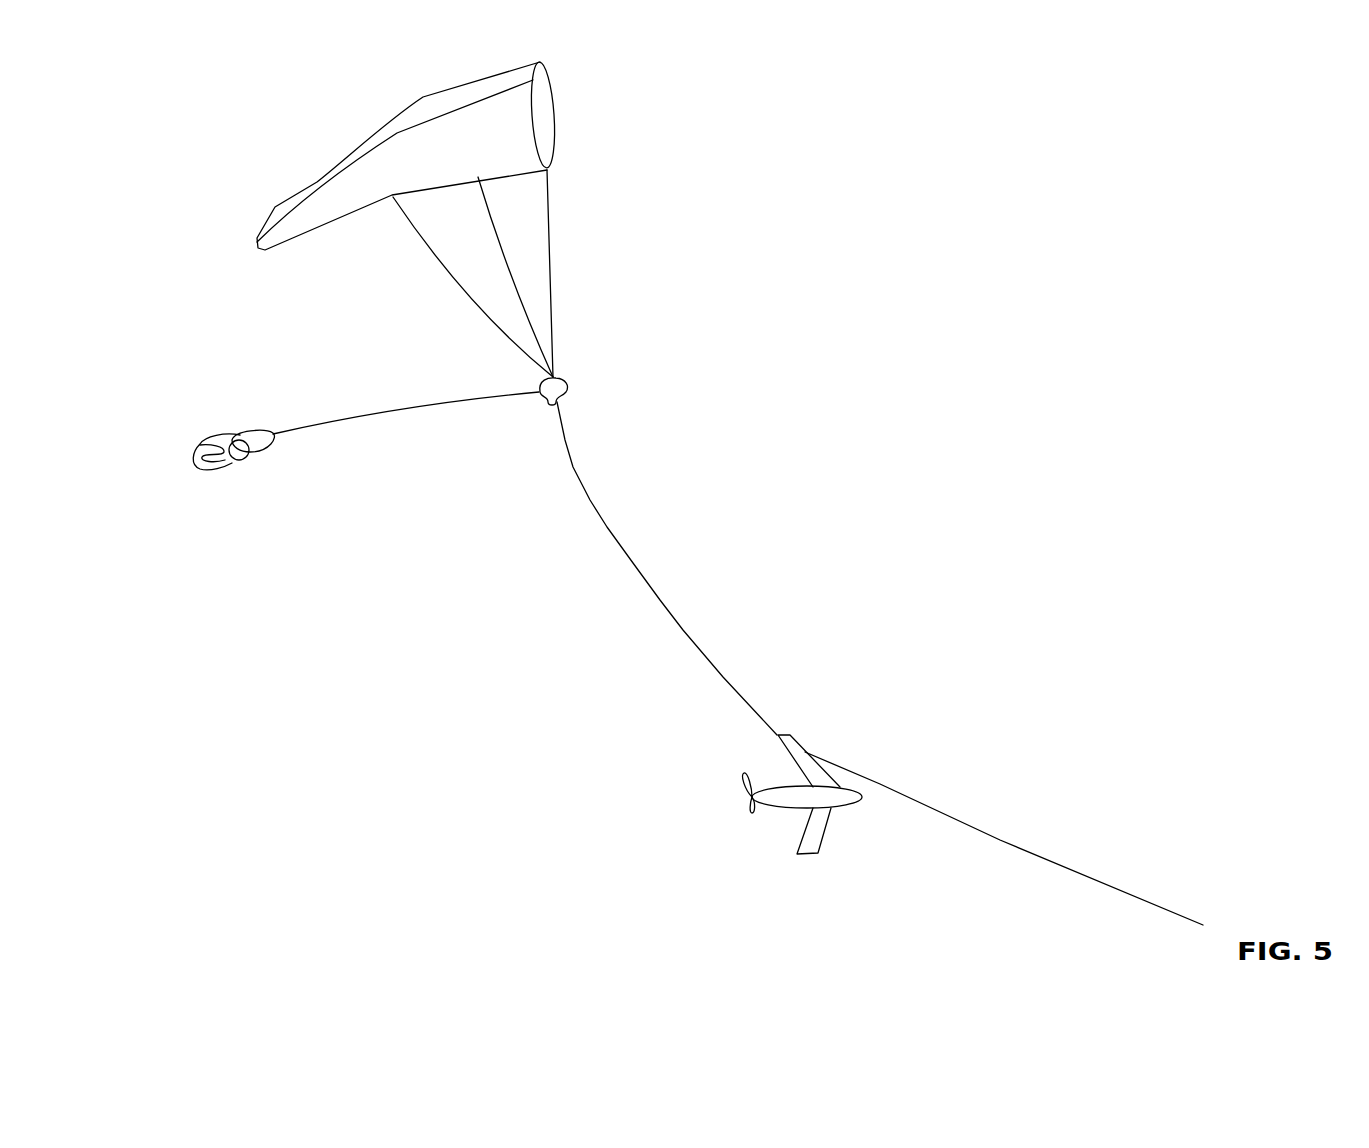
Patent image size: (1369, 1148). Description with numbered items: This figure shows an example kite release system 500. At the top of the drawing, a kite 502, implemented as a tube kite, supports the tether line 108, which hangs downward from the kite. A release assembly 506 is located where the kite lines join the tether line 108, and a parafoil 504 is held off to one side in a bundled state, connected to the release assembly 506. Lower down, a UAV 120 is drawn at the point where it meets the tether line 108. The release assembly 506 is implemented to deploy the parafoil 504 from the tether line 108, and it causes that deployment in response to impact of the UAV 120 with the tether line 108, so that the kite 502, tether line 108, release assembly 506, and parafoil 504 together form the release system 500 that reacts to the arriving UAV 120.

The kite release system 500 is at (257, 97).
The kite 502 is at (432, 148).
The parafoil 504 is at (236, 463).
The release assembly 506 is at (568, 390).
The tether line 108 is at (633, 563).
The UAV 120 is at (767, 785).